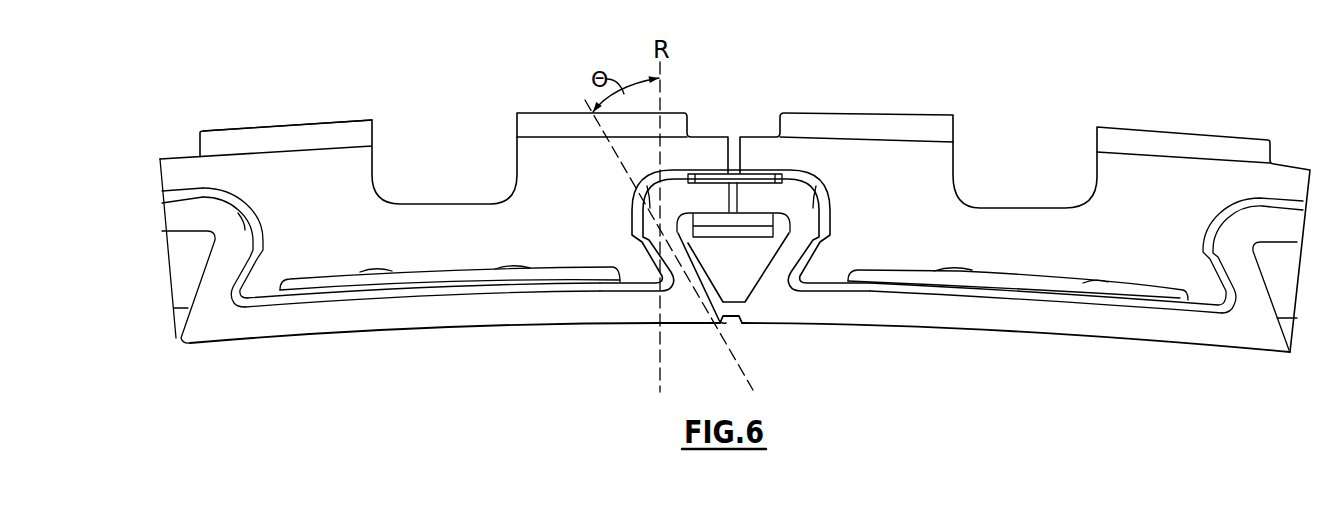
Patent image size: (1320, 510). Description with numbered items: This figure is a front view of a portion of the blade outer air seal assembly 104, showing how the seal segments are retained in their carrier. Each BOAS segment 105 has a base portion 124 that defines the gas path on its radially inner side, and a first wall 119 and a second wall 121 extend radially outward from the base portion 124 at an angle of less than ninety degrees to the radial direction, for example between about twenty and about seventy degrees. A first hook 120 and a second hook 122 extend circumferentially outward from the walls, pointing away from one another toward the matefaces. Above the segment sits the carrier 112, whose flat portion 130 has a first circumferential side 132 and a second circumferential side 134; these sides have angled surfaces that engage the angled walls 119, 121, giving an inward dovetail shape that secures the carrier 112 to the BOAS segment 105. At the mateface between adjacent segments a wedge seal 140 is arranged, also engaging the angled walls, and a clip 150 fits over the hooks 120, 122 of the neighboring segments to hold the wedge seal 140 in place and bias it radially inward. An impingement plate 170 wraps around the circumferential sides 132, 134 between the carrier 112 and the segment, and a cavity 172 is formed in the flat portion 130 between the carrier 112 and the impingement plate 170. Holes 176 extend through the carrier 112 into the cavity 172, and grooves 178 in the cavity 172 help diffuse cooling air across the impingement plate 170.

The BOAS assembly 104 is at (1163, 80).
The BOAS segment 105 is at (551, 316).
The carrier 112 is at (322, 146).
The first wall 119 is at (222, 277).
The first hook 120 is at (178, 220).
The second wall 121 is at (711, 332).
The second hook 122 is at (702, 193).
The base portion 124 is at (362, 317).
The flat portion 130 is at (447, 254).
The first circumferential side 132 is at (257, 280).
The second circumferential side 134 is at (645, 272).
The wedge seal 140 is at (743, 270).
The clip 150 is at (742, 173).
The impingement plate 170 is at (597, 276).
The cavity 172 is at (1113, 288).
The holes 176 is at (1216, 282).
The grooves 178 is at (958, 270).